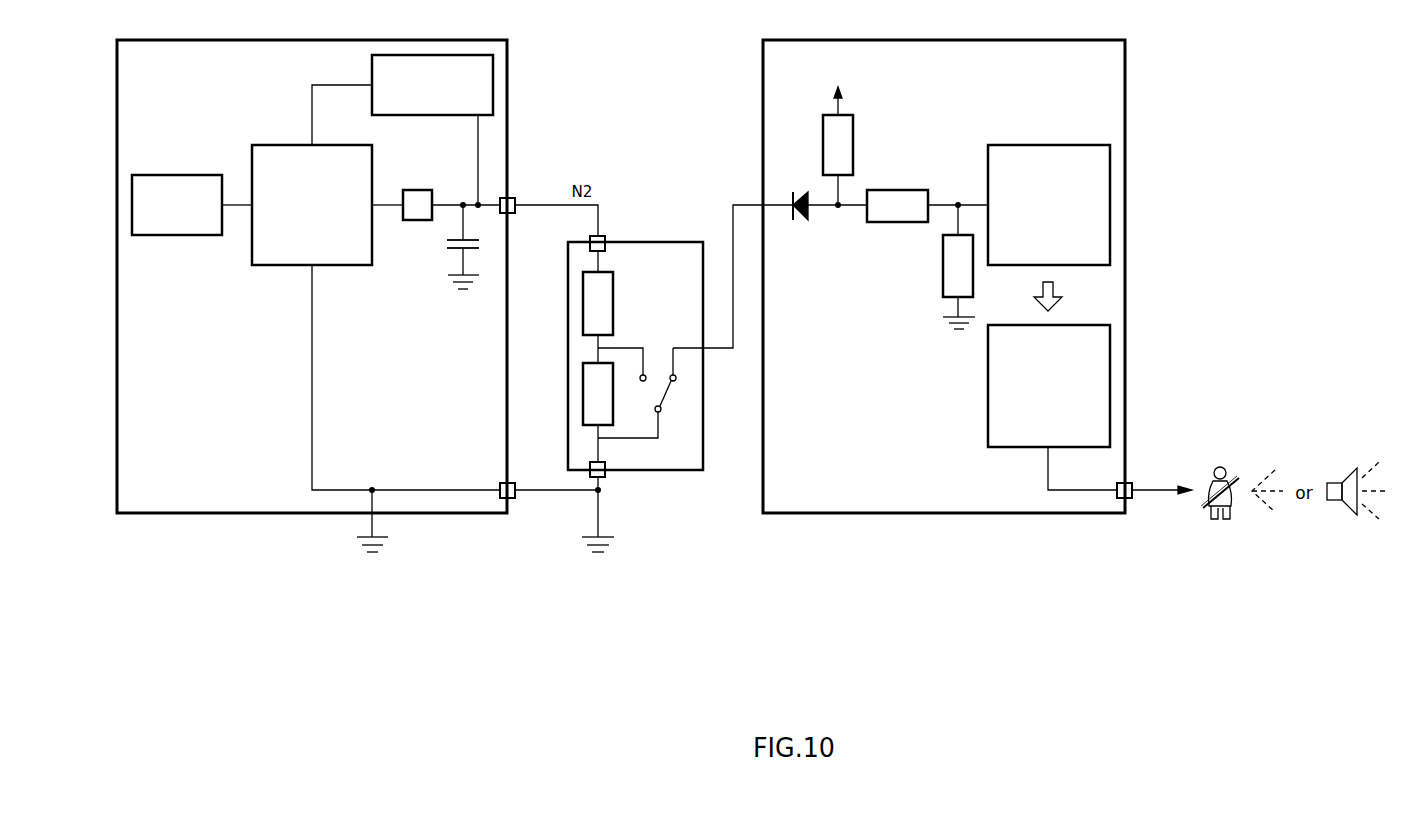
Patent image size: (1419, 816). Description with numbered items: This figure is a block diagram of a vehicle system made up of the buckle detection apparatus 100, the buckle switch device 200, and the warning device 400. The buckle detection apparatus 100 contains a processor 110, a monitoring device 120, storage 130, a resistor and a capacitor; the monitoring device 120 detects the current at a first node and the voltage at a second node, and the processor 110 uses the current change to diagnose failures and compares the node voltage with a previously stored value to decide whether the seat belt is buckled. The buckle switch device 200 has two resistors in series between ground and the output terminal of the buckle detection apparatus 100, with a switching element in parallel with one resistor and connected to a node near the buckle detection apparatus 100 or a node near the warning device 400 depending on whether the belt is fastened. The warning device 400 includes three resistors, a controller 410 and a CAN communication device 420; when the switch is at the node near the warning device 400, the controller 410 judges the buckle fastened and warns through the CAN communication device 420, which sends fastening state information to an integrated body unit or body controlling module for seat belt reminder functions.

The buckle detection apparatus 100 is at (192, 124).
The processor 110 is at (297, 228).
The monitoring device 120 is at (482, 109).
The storage 130 is at (192, 228).
The buckle switch device 200 is at (643, 273).
The warning device 400 is at (1107, 76).
The controller 410 is at (1034, 228).
The CAN communication device 420 is at (1034, 433).